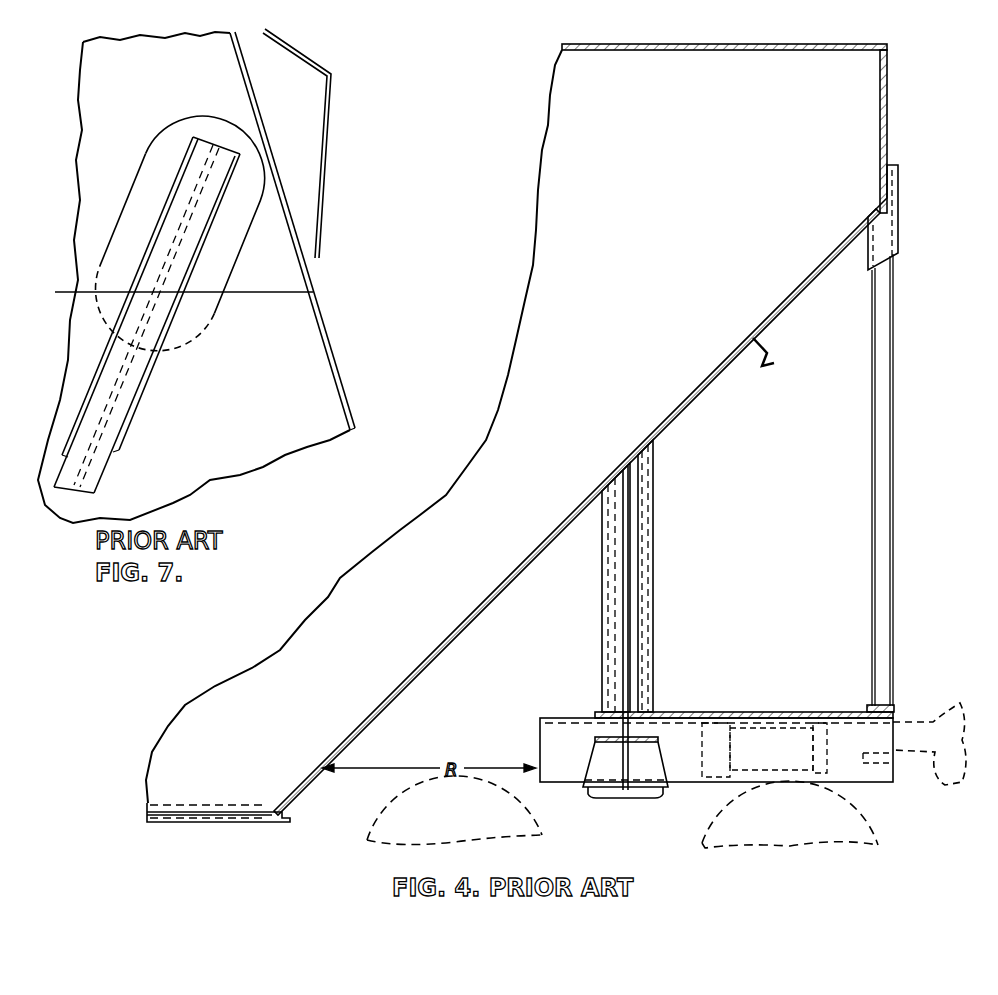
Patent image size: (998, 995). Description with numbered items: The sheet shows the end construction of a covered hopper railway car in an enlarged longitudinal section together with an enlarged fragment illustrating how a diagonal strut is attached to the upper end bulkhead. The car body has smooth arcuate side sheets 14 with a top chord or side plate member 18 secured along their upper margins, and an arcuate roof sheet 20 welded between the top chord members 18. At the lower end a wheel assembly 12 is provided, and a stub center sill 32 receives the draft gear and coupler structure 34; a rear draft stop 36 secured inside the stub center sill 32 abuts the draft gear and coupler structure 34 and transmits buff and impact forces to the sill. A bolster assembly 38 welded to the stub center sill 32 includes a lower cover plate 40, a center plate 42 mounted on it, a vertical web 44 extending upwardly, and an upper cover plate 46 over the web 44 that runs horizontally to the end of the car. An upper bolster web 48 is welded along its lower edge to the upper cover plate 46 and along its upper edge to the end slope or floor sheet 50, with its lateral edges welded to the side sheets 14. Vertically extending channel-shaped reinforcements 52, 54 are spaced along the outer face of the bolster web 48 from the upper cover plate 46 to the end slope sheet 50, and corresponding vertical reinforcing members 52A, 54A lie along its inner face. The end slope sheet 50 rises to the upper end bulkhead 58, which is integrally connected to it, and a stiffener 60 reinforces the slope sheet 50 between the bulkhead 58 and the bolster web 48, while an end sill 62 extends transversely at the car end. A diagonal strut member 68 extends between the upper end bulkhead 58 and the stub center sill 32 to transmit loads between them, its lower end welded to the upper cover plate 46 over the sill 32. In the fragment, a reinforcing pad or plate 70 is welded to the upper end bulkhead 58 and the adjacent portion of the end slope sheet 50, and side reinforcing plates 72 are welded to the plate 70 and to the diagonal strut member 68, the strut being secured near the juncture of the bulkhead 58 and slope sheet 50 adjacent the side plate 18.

In FIG. 4, the wheel assembly 12 is at (880, 831).
In FIG. 7, the arcuate side sheet 14 is at (338, 366).
In FIG. 7, the top chord or side plate member 18 is at (331, 130).
In FIG. 4, the arcuate roof sheet 20 is at (722, 44).
In FIG. 4, the stub center sill 32 is at (680, 773).
In FIG. 4, the draft gear and coupler structure 34 is at (948, 706).
In FIG. 4, the rear draft stop 36 is at (727, 737).
In FIG. 4, the bolster assembly 38 is at (588, 768).
In FIG. 4, the lower cover plate 40 is at (613, 778).
In FIG. 4, the center plate 42 is at (628, 798).
In FIG. 4, the vertical web 44 is at (630, 764).
In FIG. 4, the upper cover plate 46 is at (783, 712).
In FIG. 4, the upper bolster web 48 is at (627, 668).
In FIG. 7, the end slope or floor sheet 50 is at (263, 426).
In FIG. 4, the end slope or floor sheet 50 is at (712, 385).
In FIG. 4, the channel-shaped reinforcement 52 is at (656, 510).
In FIG. 4, the vertical reinforcing member 52A is at (603, 616).
In FIG. 4, the channel-shaped reinforcement 54 is at (648, 550).
In FIG. 4, the vertical reinforcing member 54A is at (607, 574).
In FIG. 7, the upper end bulkhead 58 is at (157, 84).
In FIG. 4, the upper end bulkhead 58 is at (888, 68).
In FIG. 4, the stiffener 60 is at (774, 352).
In FIG. 4, the end sill 62 is at (893, 700).
In FIG. 7, the diagonal strut member 68 is at (90, 476).
In FIG. 4, the diagonal strut member 68 is at (890, 450).
In FIG. 7, the reinforcing pad or plate 70 is at (160, 156).
In FIG. 4, the reinforcing pad or plate 70 is at (886, 160).
In FIG. 7, the side reinforcing plate 72 is at (170, 204).